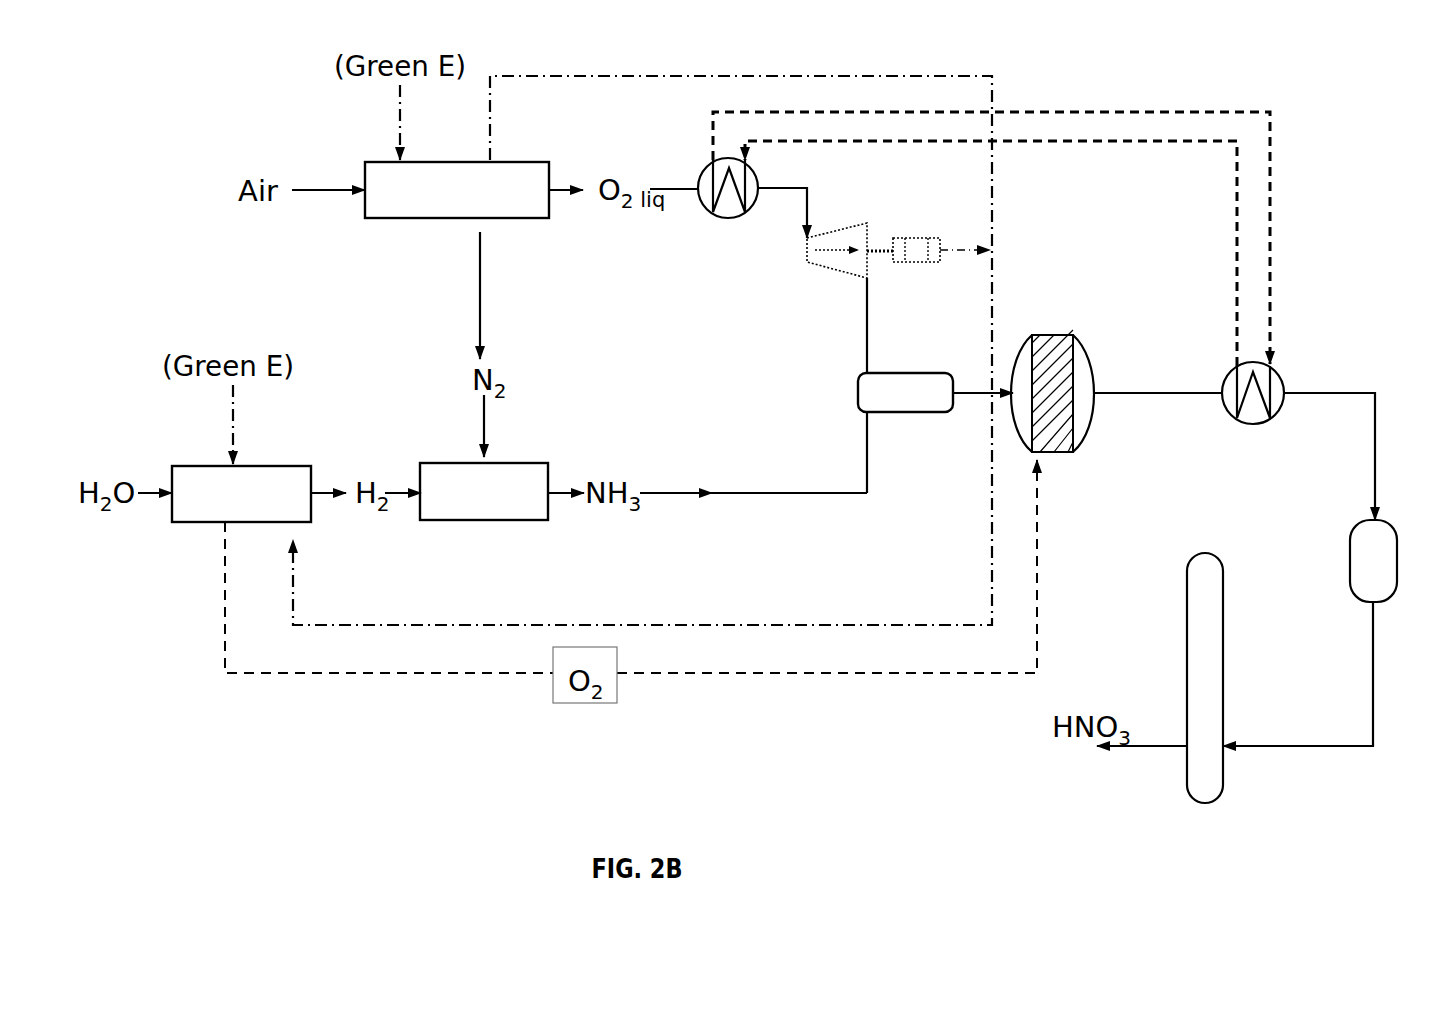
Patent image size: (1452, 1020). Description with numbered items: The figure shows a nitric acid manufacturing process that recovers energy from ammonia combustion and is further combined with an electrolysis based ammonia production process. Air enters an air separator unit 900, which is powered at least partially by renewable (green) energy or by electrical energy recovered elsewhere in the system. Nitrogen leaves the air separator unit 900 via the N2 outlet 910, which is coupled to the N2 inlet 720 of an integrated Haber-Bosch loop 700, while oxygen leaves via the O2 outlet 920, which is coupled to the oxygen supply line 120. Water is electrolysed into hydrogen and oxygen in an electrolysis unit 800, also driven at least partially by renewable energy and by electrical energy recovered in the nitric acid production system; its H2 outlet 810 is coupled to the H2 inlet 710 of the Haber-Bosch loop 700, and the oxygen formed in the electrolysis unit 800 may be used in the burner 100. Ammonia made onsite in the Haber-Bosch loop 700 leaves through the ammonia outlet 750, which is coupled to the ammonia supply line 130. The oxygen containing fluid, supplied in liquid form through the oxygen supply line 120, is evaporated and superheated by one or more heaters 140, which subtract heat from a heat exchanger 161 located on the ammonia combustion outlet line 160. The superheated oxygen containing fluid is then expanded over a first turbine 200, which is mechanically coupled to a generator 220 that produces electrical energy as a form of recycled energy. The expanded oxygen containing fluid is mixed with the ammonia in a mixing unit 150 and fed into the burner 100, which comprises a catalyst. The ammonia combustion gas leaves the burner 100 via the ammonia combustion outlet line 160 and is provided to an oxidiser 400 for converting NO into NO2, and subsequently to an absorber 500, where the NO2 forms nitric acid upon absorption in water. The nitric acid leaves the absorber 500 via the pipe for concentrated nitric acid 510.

The burner 100 is at (1085, 447).
The oxygen supply line 120 is at (672, 190).
The ammonia supply line 130 is at (672, 494).
The heater 140 is at (738, 218).
The mixing unit 150 is at (946, 412).
The ammonia combustion outlet line 160 is at (1158, 394).
The heat exchanger 161 is at (1250, 423).
The first turbine 200 is at (815, 262).
The generator 220 is at (923, 262).
The oxidiser 400 is at (1403, 593).
The absorber 500 is at (1205, 657).
The pipe for concentrated nitric acid 510 is at (1136, 747).
The Haber-Bosch loop 700 is at (484, 491).
The H2 inlet 710 is at (400, 494).
The N2 inlet 720 is at (485, 423).
The ammonia outlet 750 is at (560, 494).
The electrolysis unit 800 is at (224, 494).
The H2 outlet 810 is at (332, 494).
The air separator unit 900 is at (457, 190).
The N2 outlet 910 is at (481, 323).
The O2 outlet 920 is at (565, 191).